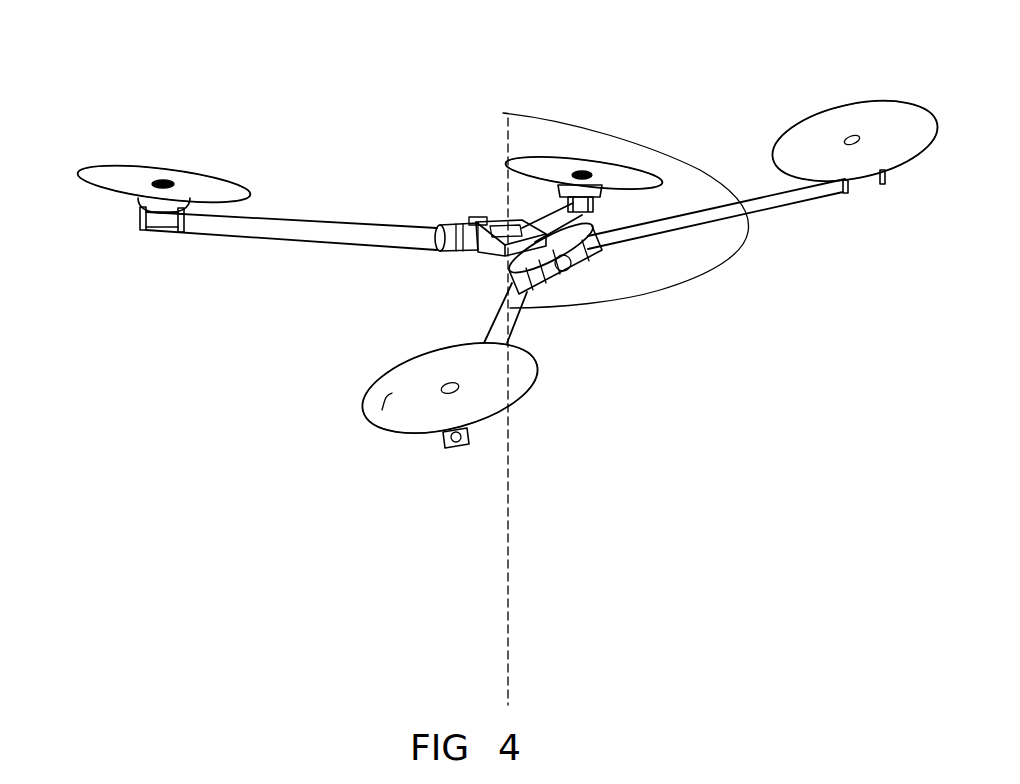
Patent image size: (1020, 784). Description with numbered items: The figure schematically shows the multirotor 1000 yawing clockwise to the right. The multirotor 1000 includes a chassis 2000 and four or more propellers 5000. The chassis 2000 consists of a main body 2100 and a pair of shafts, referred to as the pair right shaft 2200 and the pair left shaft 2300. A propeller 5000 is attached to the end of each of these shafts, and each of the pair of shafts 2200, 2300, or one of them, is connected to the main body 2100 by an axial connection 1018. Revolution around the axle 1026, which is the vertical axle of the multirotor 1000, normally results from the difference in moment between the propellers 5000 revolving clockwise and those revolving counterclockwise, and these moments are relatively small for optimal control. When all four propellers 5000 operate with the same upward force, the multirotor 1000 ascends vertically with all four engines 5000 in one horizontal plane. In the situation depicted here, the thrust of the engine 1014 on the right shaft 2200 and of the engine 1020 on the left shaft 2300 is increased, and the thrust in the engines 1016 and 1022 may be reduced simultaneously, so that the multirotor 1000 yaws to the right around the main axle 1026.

The multirotor 1000 is at (730, 138).
The engine 1014 is at (832, 157).
The engine 1016 is at (442, 404).
The axial connection 1018 is at (437, 220).
The engine 1020 is at (192, 183).
The engine 1022 is at (592, 170).
The axle 1026 is at (468, 557).
The chassis 2000 is at (492, 250).
The main body 2100 is at (497, 250).
The pair right shaft 2200 is at (788, 190).
The pair left shaft 2300 is at (550, 204).
The propeller 5000 is at (148, 173).